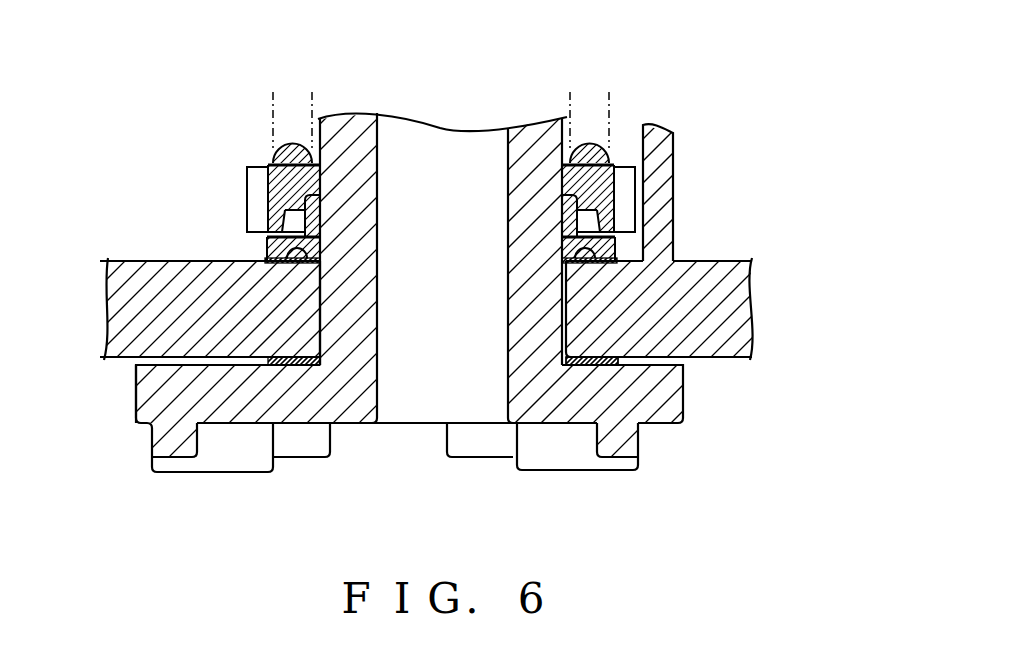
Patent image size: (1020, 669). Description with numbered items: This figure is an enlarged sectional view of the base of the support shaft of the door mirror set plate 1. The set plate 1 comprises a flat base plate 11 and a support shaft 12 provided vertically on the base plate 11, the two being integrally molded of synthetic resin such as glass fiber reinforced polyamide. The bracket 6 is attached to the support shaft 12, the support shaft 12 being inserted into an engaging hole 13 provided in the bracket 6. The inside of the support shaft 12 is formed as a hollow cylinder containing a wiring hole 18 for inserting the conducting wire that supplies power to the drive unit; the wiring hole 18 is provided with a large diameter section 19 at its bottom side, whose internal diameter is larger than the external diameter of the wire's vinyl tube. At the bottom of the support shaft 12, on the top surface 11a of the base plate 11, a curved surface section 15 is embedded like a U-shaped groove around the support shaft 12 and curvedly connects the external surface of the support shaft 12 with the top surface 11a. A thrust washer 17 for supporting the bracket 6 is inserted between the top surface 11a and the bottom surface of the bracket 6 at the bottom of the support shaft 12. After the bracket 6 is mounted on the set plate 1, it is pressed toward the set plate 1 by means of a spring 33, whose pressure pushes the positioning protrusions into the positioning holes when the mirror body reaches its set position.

The set plate 1 is at (127, 391).
The bracket 6 is at (692, 283).
The base plate 11 is at (657, 393).
The top surface 11a is at (662, 352).
The support shaft 12 is at (536, 150).
The engaging hole 13 is at (331, 296).
The curved surface section 15 is at (317, 364).
The thrust washer 17 is at (284, 367).
The wiring hole 18 is at (430, 407).
The large diameter section 19 is at (373, 228).
The spring 33 is at (300, 145).